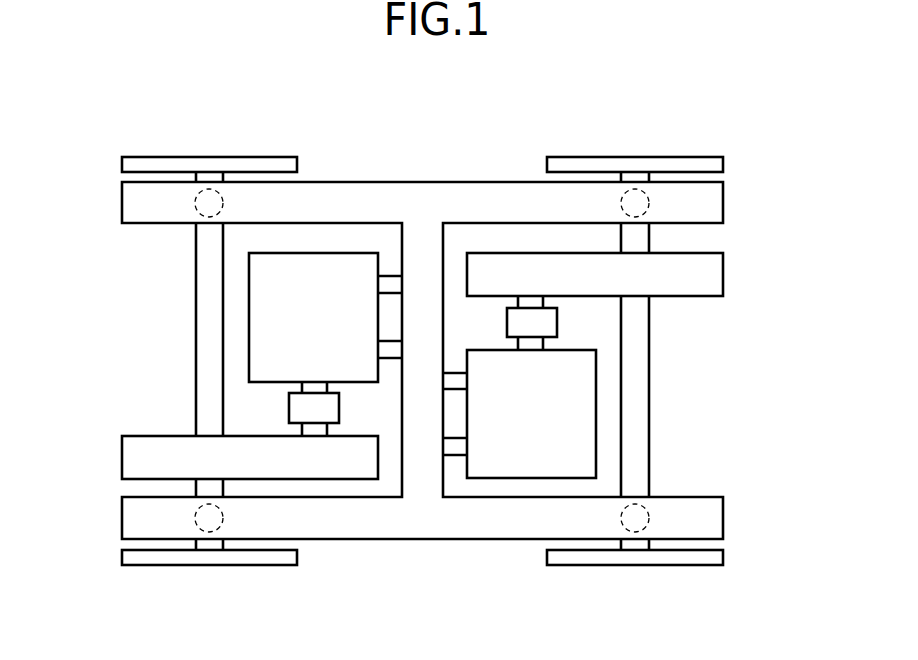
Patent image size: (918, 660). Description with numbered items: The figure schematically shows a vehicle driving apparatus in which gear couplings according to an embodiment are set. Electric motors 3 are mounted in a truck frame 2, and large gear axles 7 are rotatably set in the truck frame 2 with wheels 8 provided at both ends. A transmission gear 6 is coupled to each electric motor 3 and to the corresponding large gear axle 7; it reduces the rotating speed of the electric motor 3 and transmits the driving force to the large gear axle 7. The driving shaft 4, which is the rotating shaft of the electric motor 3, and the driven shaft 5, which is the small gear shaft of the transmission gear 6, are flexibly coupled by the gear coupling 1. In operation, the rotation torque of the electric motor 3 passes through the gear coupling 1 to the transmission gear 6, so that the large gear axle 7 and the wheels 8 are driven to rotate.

The gear coupling 1 is at (289, 410).
The truck frame 2 is at (487, 182).
The electric motor 3 is at (340, 253).
The driving shaft 4 is at (313, 383).
The driven shaft 5 is at (313, 432).
The transmission gear 6 is at (122, 458).
The large gear axle 7 is at (208, 293).
The wheel 8 is at (122, 165).